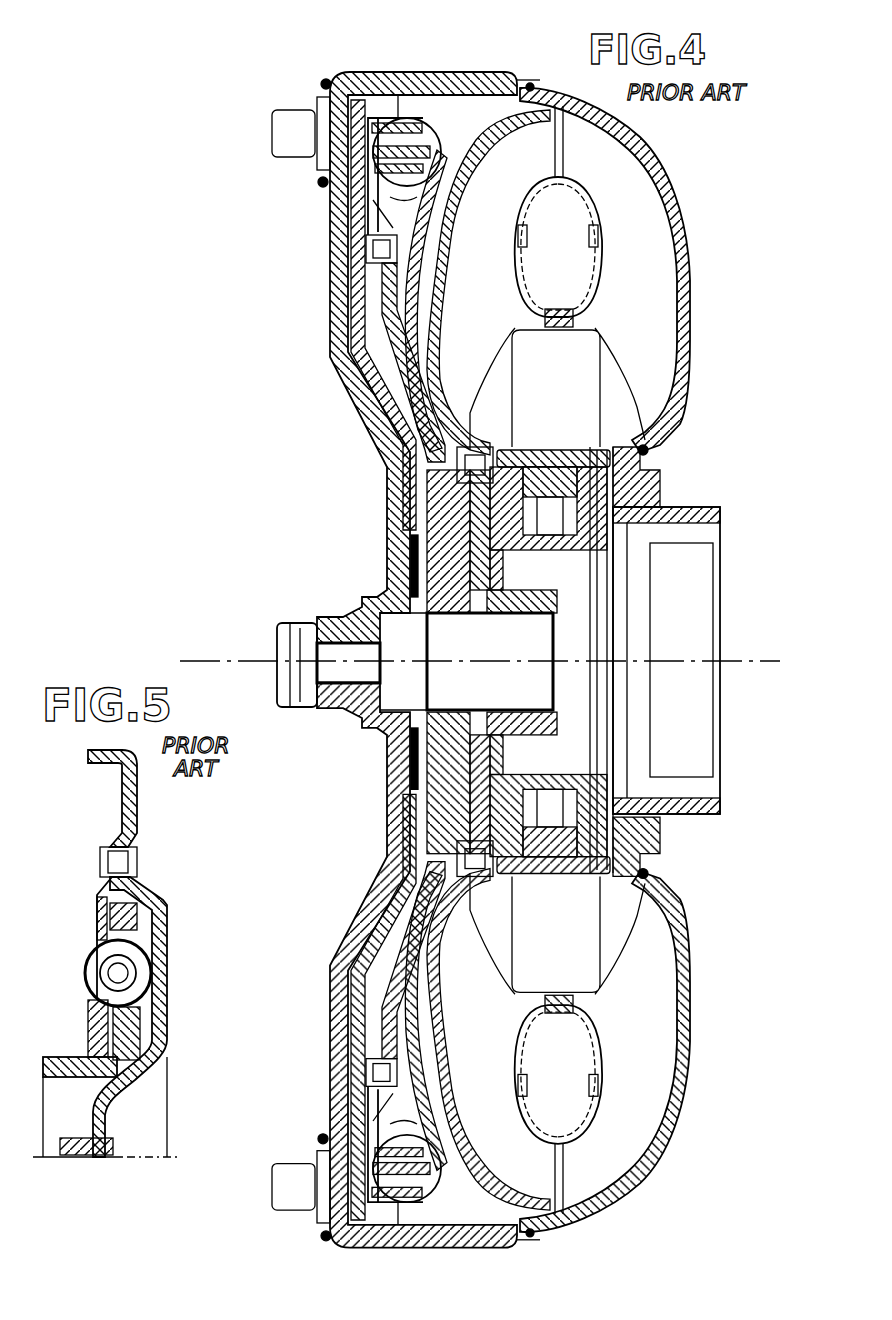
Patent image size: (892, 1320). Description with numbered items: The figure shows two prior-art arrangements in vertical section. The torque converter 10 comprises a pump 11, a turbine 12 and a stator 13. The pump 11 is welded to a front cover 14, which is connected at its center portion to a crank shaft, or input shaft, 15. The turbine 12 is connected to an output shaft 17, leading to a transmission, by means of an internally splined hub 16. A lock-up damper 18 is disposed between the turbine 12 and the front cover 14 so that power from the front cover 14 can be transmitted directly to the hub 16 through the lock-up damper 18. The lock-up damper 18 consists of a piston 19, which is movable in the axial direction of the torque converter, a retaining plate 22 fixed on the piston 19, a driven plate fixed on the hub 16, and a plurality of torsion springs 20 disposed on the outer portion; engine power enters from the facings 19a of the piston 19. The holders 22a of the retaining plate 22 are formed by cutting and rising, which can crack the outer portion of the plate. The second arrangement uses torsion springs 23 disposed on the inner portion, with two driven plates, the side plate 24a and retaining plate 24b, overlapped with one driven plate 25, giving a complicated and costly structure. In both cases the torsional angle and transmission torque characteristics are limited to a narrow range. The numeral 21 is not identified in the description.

In FIG. 4, the torque converter 10 is at (489, 626).
In FIG. 4, the pump 11 is at (667, 282).
In FIG. 4, the turbine 12 is at (497, 268).
In FIG. 4, the stator 13 is at (585, 402).
In FIG. 4, the front cover 14 is at (330, 253).
In FIG. 4, the crank shaft 15 is at (212, 660).
In FIG. 4, the hub 16 is at (473, 558).
In FIG. 4, the output shaft 17 is at (780, 660).
In FIG. 4, the lock-up damper 18 is at (440, 119).
In FIG. 4, the piston 19 is at (383, 367).
In FIG. 5, the piston 19 is at (167, 910).
In FIG. 4, the facings 19a is at (368, 163).
In FIG. 5, the facings 19a is at (143, 787).
In FIG. 4, the torsion springs 20 is at (472, 165).
In FIG. 4, the turbine shell flange 21 is at (437, 430).
In FIG. 4, the retaining plate 22 is at (368, 199).
In FIG. 4, the holders 22a is at (410, 95).
In FIG. 5, the torsion springs 23 is at (145, 975).
In FIG. 5, the side plate 24a is at (165, 1035).
In FIG. 5, the retaining plate 24b is at (90, 1033).
In FIG. 5, the plate 25 is at (117, 1060).